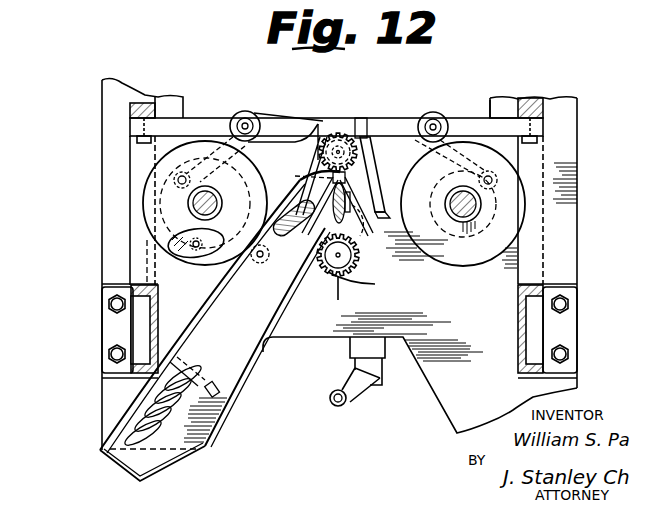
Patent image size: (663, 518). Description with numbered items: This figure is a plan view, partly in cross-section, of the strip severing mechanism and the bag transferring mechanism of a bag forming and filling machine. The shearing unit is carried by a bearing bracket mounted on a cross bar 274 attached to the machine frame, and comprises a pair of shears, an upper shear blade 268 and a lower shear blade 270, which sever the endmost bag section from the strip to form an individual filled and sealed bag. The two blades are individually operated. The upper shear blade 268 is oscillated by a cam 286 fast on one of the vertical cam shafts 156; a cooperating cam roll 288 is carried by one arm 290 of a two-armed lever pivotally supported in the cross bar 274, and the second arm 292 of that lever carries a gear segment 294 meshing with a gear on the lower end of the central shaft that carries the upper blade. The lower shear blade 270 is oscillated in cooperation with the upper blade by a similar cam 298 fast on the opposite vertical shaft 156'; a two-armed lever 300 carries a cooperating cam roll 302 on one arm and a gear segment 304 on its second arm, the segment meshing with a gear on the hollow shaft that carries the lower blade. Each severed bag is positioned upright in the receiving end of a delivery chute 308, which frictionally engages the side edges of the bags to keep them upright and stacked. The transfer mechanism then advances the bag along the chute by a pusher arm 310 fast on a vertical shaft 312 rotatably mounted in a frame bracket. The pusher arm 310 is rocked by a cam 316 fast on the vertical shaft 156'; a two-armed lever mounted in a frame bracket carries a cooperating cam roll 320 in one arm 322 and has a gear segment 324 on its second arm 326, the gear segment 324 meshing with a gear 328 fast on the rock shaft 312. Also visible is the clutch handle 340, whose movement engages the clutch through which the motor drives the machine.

The cross bar 274 is at (207, 118).
The two-armed lever 300 is at (241, 111).
The gear segment 304 is at (330, 118).
The gear segment 294 is at (353, 118).
The second arm 292 is at (413, 115).
The arm 290 is at (491, 110).
The cam 298 is at (146, 182).
The cam roll 302 is at (175, 176).
The vertical shaft 156' is at (130, 203).
The cam roll 320 is at (152, 257).
The cam 316 is at (198, 258).
The second arm 326 is at (297, 252).
The arm 322 is at (200, 281).
The gear segment 324 is at (327, 243).
The delivery chute 308 is at (217, 356).
The upper shear blade 268 is at (318, 154).
The lower shear blade 270 is at (371, 155).
The cam 286 is at (505, 219).
The cam roll 288 is at (497, 177).
The vertical shaft 156 is at (548, 235).
The pusher arm 310 is at (360, 251).
The gear 328 is at (362, 276).
The vertical shaft 312 is at (340, 280).
The clutch handle 340 is at (346, 410).